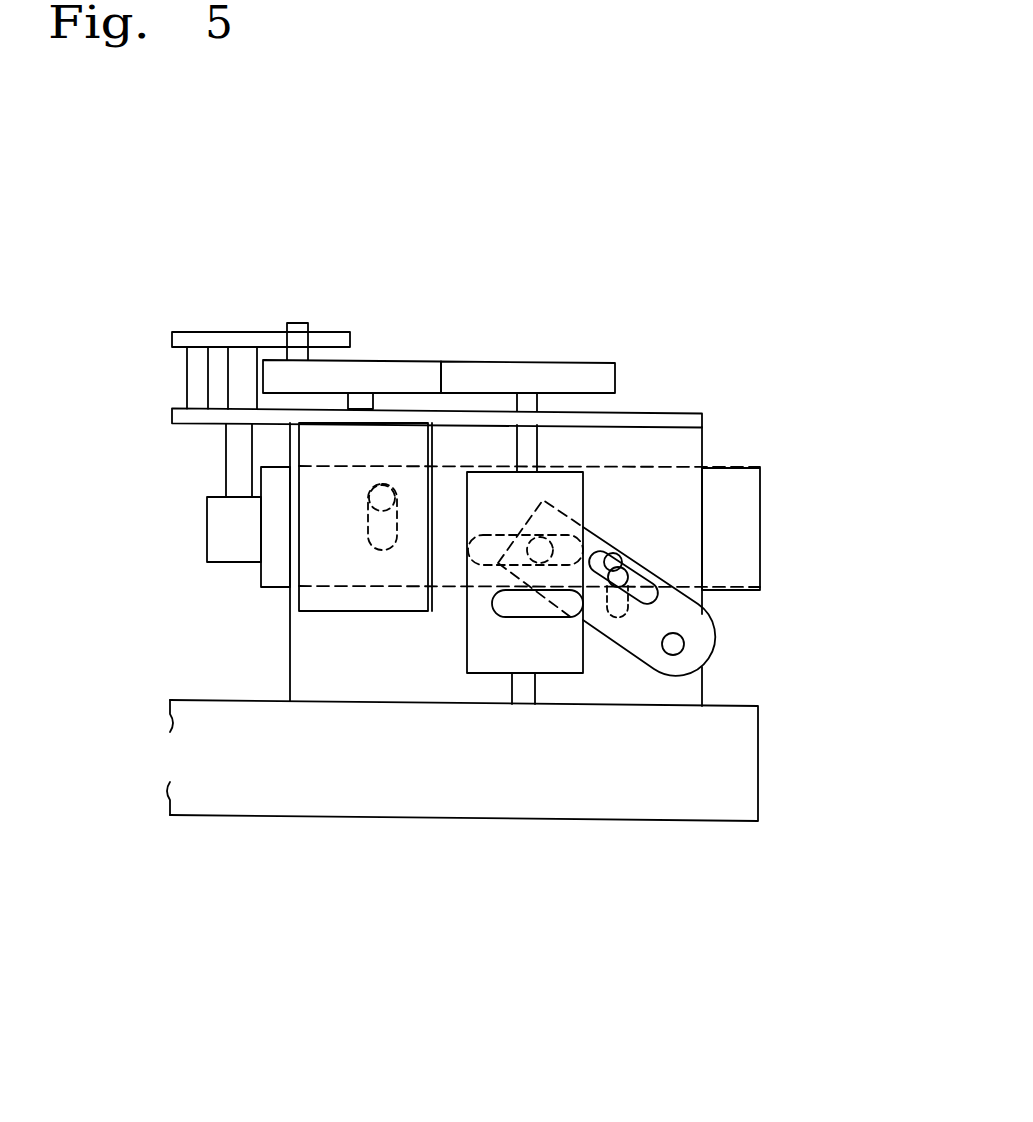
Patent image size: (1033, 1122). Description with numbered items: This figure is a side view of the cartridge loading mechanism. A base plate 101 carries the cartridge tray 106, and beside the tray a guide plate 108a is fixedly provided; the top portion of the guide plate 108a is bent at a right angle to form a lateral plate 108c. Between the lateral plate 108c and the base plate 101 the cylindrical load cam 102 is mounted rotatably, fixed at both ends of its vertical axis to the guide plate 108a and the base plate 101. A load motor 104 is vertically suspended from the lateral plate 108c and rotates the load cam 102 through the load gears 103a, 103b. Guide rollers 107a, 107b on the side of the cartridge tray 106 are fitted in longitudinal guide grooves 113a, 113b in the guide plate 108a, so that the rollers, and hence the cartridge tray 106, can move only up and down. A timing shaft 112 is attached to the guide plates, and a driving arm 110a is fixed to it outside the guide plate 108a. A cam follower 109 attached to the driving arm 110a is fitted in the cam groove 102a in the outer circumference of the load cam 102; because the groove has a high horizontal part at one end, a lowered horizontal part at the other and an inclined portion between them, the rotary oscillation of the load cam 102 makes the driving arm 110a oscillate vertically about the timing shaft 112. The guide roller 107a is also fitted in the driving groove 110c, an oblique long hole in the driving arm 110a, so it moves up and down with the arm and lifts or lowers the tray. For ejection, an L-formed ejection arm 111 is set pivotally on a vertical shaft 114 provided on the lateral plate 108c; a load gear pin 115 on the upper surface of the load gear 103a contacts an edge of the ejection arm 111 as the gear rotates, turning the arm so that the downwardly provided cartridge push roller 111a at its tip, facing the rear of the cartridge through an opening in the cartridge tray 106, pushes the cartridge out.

The base plate 101 is at (757, 787).
The load cam 102 is at (572, 457).
The cam groove 102a is at (502, 618).
The load gear 103a is at (418, 360).
The load gear 103b is at (530, 357).
The load motor 104 is at (342, 612).
The cartridge tray 106 is at (760, 563).
The guide roller 107a is at (627, 552).
The guide roller 107b is at (390, 487).
The guide plate 108a is at (702, 443).
The lateral plate 108c is at (567, 409).
The cam follower 109 is at (540, 568).
The driving arm 110a is at (712, 632).
The driving groove 110c is at (707, 615).
The ejection arm 111 is at (263, 330).
The cartridge push roller 111a is at (207, 547).
The timing shaft 112 is at (684, 646).
The guide groove 113a is at (619, 618).
The guide groove 113b is at (368, 530).
The vertical shaft 114 is at (187, 388).
The load gear pin 115 is at (300, 323).